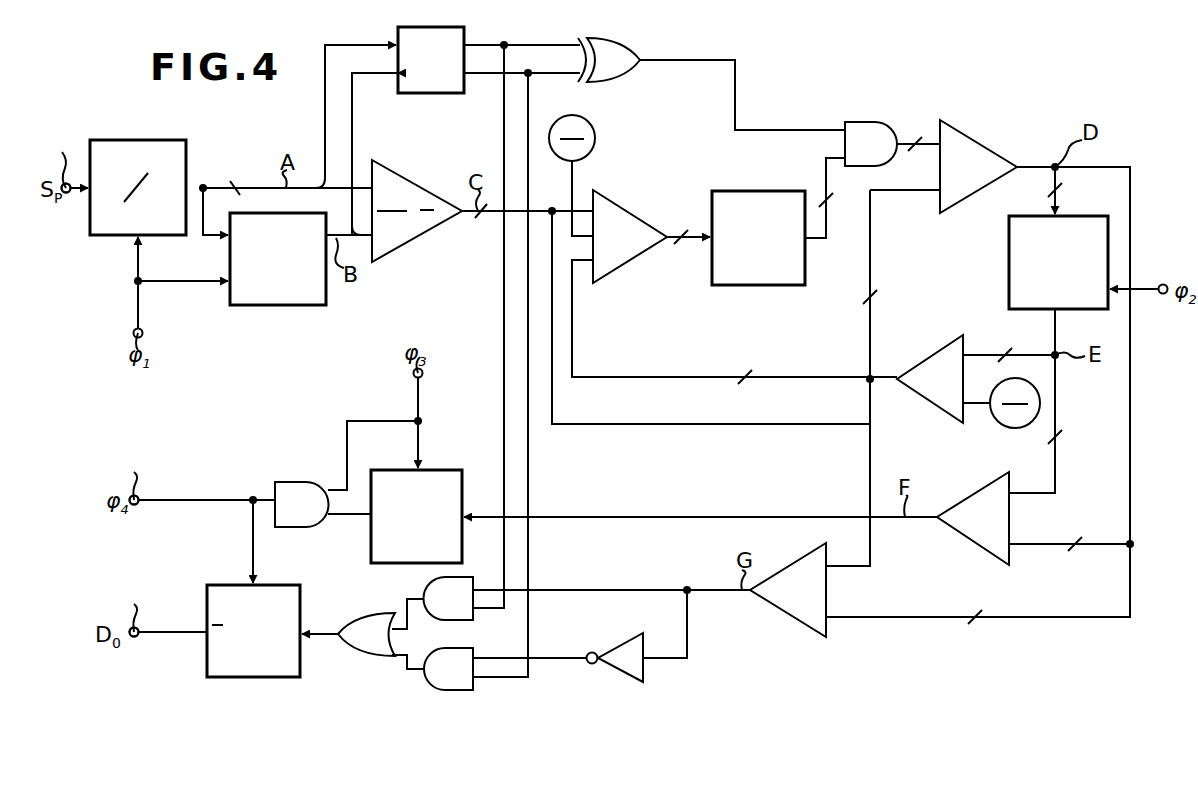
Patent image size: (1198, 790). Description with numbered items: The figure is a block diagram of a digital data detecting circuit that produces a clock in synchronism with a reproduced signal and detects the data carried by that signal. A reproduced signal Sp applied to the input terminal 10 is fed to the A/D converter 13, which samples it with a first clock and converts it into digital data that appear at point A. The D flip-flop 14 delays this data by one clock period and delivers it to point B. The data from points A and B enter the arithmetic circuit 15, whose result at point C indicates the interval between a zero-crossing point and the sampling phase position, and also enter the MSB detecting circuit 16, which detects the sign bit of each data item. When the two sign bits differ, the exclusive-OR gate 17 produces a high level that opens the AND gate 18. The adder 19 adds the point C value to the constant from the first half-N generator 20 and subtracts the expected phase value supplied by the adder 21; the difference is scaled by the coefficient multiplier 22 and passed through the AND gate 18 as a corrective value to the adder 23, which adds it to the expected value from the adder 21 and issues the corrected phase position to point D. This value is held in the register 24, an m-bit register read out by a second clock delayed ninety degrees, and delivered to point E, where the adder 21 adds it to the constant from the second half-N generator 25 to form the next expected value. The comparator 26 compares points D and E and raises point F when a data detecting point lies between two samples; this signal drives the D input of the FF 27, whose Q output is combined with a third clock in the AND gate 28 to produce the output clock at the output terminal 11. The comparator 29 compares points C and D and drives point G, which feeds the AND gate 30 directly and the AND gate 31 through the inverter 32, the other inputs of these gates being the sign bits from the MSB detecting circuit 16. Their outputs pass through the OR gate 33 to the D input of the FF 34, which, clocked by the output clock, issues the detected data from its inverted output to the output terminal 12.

The input terminal 10 is at (60, 164).
The output terminal 11 is at (137, 475).
The output terminal 12 is at (137, 607).
The A/D converter 13 is at (128, 140).
The D flip-flop 14 is at (290, 305).
The arithmetic circuit 15 is at (412, 183).
The MSB detecting circuit 16 is at (440, 93).
The exclusive-OR gate 17 is at (626, 72).
The AND gate 18 is at (880, 122).
The adder 19 is at (630, 214).
The N/2 generator 20 is at (595, 138).
The adder 21 is at (924, 362).
The coefficient multiplier 22 is at (762, 191).
The adder 23 is at (978, 148).
The register 24 is at (1080, 216).
The N/2 generator 25 is at (1002, 426).
The comparator 26 is at (965, 500).
The FF 27 is at (448, 470).
The AND gate 28 is at (300, 482).
The comparator 29 is at (795, 616).
The AND gate 30 is at (462, 577).
The AND gate 31 is at (430, 684).
The inverter 32 is at (622, 645).
The OR gate 33 is at (370, 652).
The FF 34 is at (212, 663).